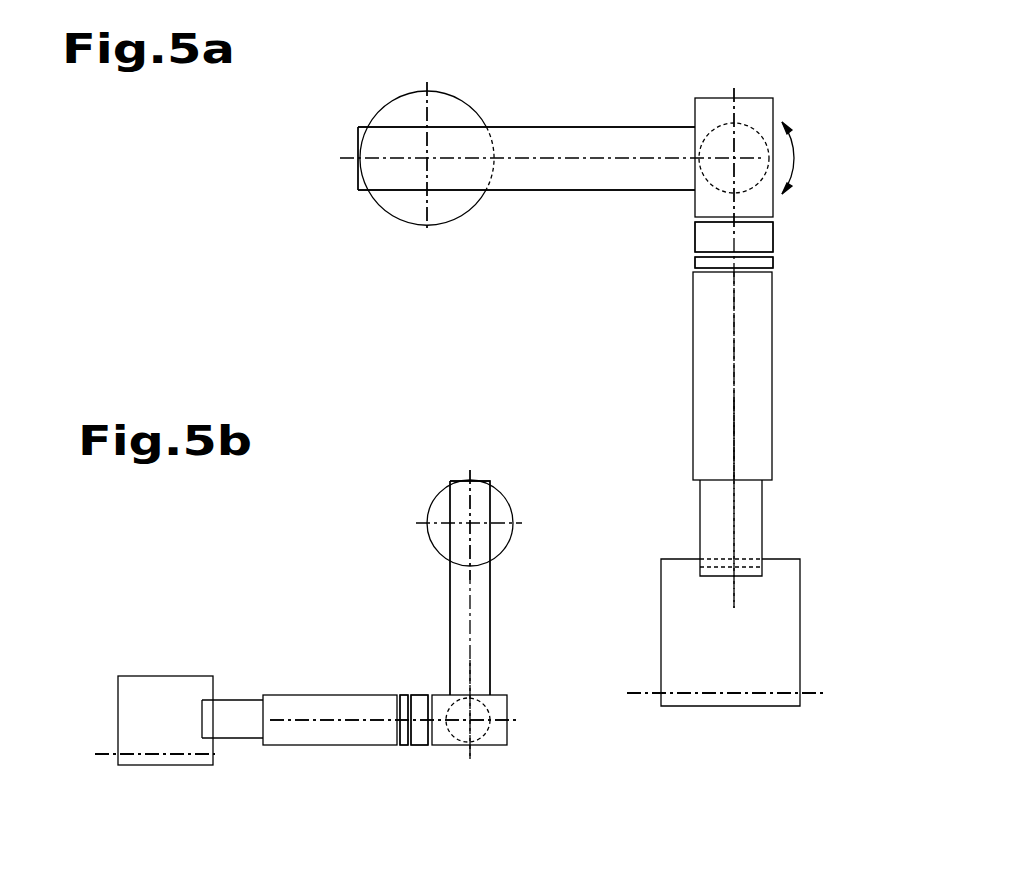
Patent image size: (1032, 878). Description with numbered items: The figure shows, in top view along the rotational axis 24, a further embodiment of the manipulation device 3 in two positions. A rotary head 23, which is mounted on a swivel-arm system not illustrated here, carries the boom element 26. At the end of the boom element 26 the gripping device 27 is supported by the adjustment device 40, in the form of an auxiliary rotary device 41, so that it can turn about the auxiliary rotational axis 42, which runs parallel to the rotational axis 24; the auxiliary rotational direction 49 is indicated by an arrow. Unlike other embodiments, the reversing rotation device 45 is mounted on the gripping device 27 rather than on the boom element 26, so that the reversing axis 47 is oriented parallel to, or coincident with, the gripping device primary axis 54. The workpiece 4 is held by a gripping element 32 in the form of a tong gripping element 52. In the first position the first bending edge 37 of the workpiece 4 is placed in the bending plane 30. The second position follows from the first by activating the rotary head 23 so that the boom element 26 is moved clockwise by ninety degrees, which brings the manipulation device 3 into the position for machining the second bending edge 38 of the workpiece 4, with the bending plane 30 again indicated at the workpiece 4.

In FIG. 5A, the manipulation device 3 is at (533, 118).
In FIG. 5B, the manipulation device 3 is at (420, 612).
In FIG. 5A, the workpiece 4 is at (688, 570).
In FIG. 5B, the workpiece 4 is at (168, 690).
In FIG. 5A, the rotary head 23 is at (400, 207).
In FIG. 5B, the rotary head 23 is at (497, 540).
In FIG. 5A, the rotational axis 24 is at (427, 158).
In FIG. 5B, the rotational axis 24 is at (470, 523).
In FIG. 5A, the boom element 26 is at (555, 178).
In FIG. 5B, the boom element 26 is at (478, 593).
In FIG. 5A, the gripping device 27 is at (757, 118).
In FIG. 5B, the gripping device 27 is at (347, 735).
In FIG. 5A, the bending plane 30 is at (820, 693).
In FIG. 5B, the bending plane 30 is at (97, 754).
In FIG. 5A, the gripping element 32 is at (742, 525).
In FIG. 5B, the gripping element 32 is at (233, 716).
In FIG. 5A, the first bending edge 37 is at (770, 693).
In FIG. 5B, the second bending edge 38 is at (147, 754).
In FIG. 5A, the adjustment device 40 is at (686, 120).
In FIG. 5B, the adjustment device 40 is at (530, 763).
In FIG. 5A, the auxiliary rotary device 41 is at (705, 128).
In FIG. 5B, the auxiliary rotary device 41 is at (480, 737).
In FIG. 5A, the auxiliary rotational axis 42 is at (732, 155).
In FIG. 5B, the auxiliary rotational axis 42 is at (470, 718).
In FIG. 5A, the reversing rotation device 45 is at (700, 232).
In FIG. 5B, the reversing rotation device 45 is at (418, 737).
In FIG. 5A, the reversing axis 47 is at (734, 406).
In FIG. 5A, the auxiliary rotational direction 49 is at (794, 158).
In FIG. 5A, the tong gripping element 52 is at (797, 528).
In FIG. 5B, the tong gripping element 52 is at (224, 660).
In FIG. 5A, the gripping device primary axis 54 is at (734, 463).
In FIG. 5B, the gripping device primary axis 54 is at (327, 720).